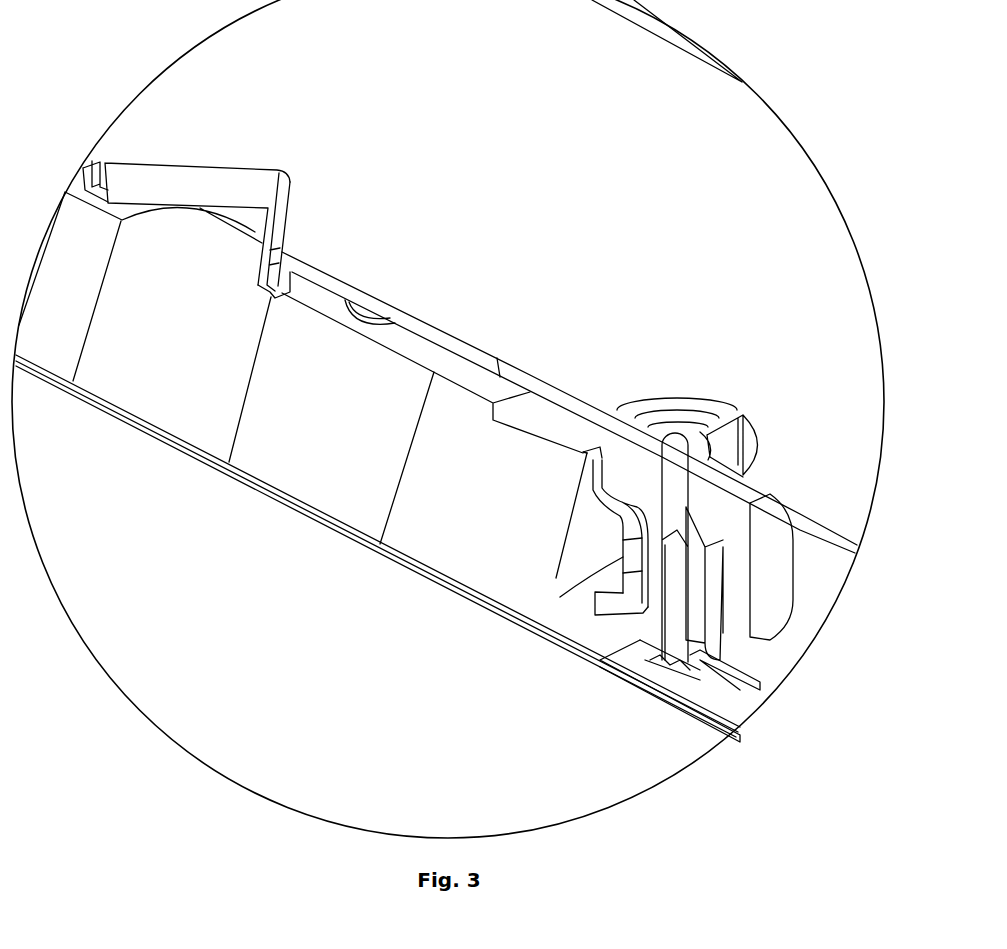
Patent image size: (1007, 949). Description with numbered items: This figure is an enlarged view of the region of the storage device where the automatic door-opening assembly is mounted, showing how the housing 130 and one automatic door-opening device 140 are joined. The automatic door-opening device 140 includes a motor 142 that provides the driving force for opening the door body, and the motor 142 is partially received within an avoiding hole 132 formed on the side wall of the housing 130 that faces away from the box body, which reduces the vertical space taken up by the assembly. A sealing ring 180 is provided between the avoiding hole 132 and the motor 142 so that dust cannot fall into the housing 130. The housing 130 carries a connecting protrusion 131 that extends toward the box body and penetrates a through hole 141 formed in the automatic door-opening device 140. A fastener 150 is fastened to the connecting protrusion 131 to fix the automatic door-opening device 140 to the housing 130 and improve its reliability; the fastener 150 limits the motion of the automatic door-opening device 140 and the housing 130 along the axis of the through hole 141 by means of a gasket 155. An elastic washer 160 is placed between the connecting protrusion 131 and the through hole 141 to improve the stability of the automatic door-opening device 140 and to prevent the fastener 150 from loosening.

The housing 130 is at (757, 153).
The connecting protrusion 131 is at (720, 637).
The avoiding hole 132 is at (275, 250).
The automatic door-opening device 140 is at (318, 473).
The through hole 141 is at (525, 570).
The motor 142 is at (248, 217).
The fastener 150 is at (657, 657).
The gasket 155 is at (730, 682).
The elastic washer 160 is at (718, 597).
The sealing ring 180 is at (155, 183).